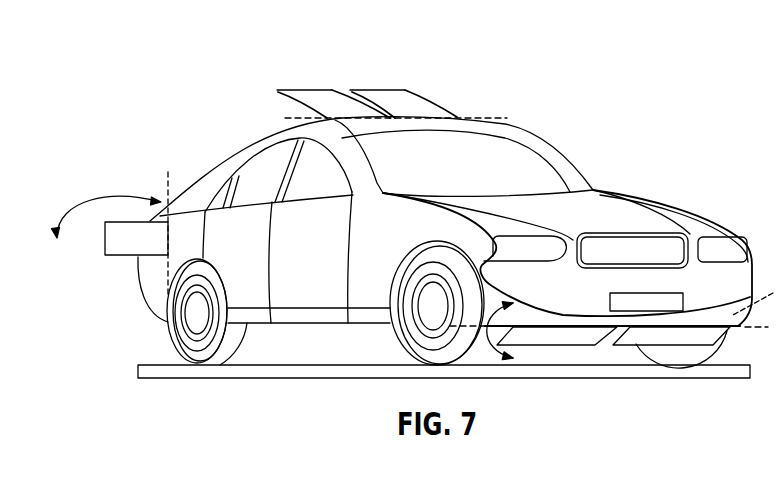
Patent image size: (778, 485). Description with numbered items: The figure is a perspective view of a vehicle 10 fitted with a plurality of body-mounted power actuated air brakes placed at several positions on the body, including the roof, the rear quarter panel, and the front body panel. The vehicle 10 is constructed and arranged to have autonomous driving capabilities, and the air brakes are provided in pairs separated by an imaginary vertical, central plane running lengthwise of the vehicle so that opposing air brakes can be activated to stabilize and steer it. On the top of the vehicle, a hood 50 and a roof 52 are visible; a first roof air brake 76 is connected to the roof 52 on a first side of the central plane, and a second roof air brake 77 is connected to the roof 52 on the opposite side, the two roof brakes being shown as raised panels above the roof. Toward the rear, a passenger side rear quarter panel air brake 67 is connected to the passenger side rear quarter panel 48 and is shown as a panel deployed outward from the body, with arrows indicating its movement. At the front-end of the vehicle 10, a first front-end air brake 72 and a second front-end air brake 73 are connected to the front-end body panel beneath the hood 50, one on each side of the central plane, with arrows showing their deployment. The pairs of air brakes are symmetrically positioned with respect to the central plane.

The vehicle 10 is at (584, 108).
The passenger side rear quarter panel 48 is at (142, 292).
The hood 50 is at (773, 293).
The roof 52 is at (414, 123).
The passenger side rear quarter panel air brake 67 is at (113, 246).
The first front-end air brake 72 is at (658, 335).
The second front-end air brake 73 is at (560, 335).
The first roof air brake 76 is at (374, 90).
The second roof air brake 77 is at (303, 90).